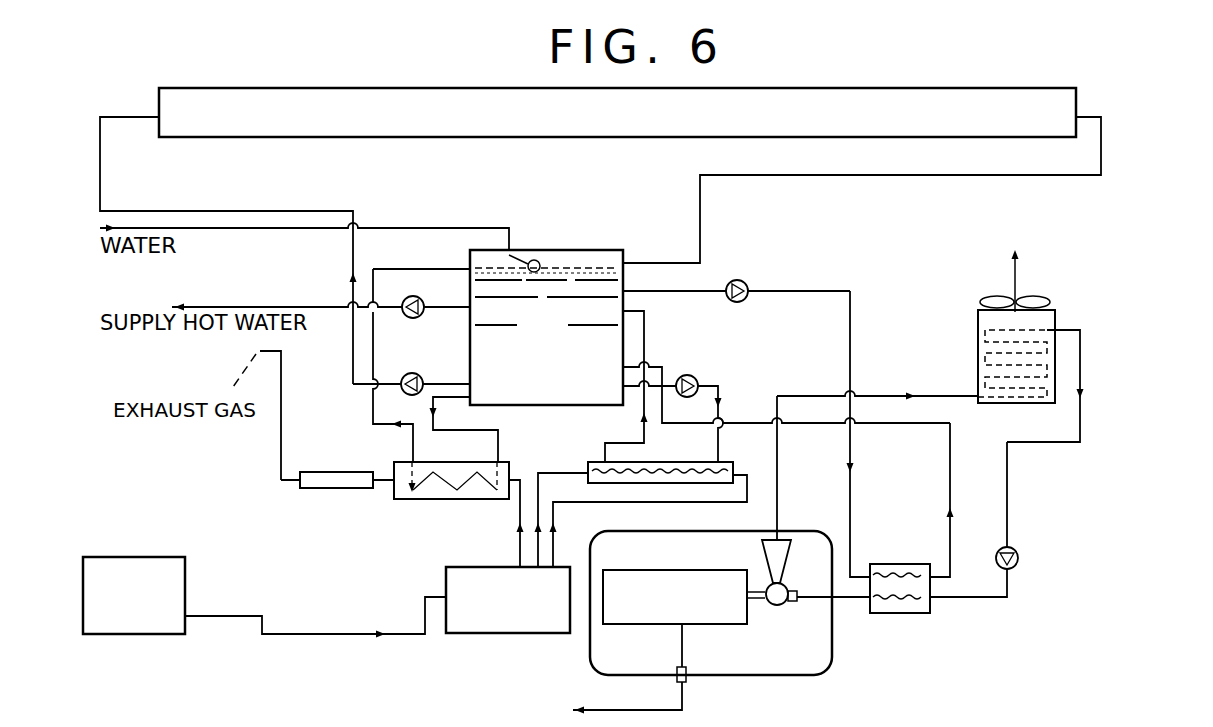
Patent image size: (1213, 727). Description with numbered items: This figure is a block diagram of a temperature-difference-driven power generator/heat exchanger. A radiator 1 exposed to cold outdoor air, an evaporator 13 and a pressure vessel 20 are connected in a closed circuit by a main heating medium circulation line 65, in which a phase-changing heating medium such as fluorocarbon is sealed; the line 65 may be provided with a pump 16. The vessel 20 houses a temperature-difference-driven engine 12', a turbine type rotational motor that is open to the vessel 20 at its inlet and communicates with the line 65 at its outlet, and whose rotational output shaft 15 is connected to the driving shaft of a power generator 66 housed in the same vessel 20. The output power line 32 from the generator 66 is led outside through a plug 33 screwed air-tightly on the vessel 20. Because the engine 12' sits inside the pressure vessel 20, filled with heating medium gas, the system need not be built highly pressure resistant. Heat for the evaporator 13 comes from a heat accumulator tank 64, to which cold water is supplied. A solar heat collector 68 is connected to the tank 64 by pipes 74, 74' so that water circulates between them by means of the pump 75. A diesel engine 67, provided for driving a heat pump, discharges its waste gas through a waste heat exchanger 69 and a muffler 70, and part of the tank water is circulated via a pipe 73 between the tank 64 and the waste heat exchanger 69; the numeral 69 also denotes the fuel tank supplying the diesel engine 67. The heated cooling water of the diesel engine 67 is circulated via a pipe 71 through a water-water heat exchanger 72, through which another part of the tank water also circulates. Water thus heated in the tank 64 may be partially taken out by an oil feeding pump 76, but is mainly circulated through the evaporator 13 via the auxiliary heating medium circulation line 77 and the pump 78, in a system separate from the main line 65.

The solar heat collector 68 is at (655, 127).
The pipe 74 is at (228, 250).
The pipe 74' is at (862, 190).
The oil feeding pump 76 is at (416, 297).
The pump 75 is at (420, 373).
The heat accumulator tank 64 is at (558, 345).
The pump 78 is at (733, 278).
The auxiliary heating medium circulation line 77 is at (852, 355).
The pipe 73 is at (498, 437).
The muffler 70 is at (338, 472).
The waste heat exchanger 69 is at (185, 578).
The water-water heat exchanger 72 is at (733, 450).
The pipe 71 is at (622, 504).
The diesel engine 67 is at (552, 633).
The pressure vessel 20 is at (827, 673).
The power generator 66 is at (699, 570).
The rotational output shaft 15 is at (755, 603).
The temperature-difference-driven engine 12' is at (816, 594).
The output power line 32 is at (682, 652).
The plug 33 is at (686, 684).
The evaporator 13 is at (930, 615).
The pump 16 is at (1018, 556).
The main heating medium circulation line 65 is at (1008, 492).
The radiator 1 is at (1057, 317).